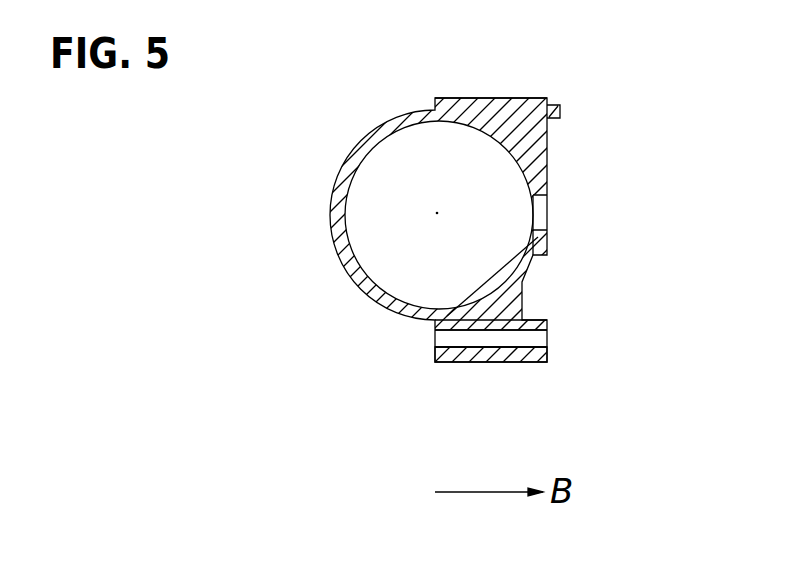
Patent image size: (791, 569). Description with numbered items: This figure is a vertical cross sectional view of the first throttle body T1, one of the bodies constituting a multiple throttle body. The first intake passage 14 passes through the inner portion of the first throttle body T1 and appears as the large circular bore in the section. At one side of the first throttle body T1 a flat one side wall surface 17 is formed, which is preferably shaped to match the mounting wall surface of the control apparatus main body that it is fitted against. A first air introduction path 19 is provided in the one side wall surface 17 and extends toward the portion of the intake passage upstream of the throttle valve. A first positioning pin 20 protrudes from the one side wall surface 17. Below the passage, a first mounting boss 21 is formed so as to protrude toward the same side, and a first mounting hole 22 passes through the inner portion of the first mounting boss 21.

The first intake passage 14 is at (352, 172).
The one side wall surface 17 is at (547, 167).
The first air introduction path 19 is at (547, 215).
The first positioning pin 20 is at (560, 112).
The first mounting boss 21 is at (537, 363).
The first mounting hole 22 is at (502, 345).
The first throttle body T1 is at (487, 98).